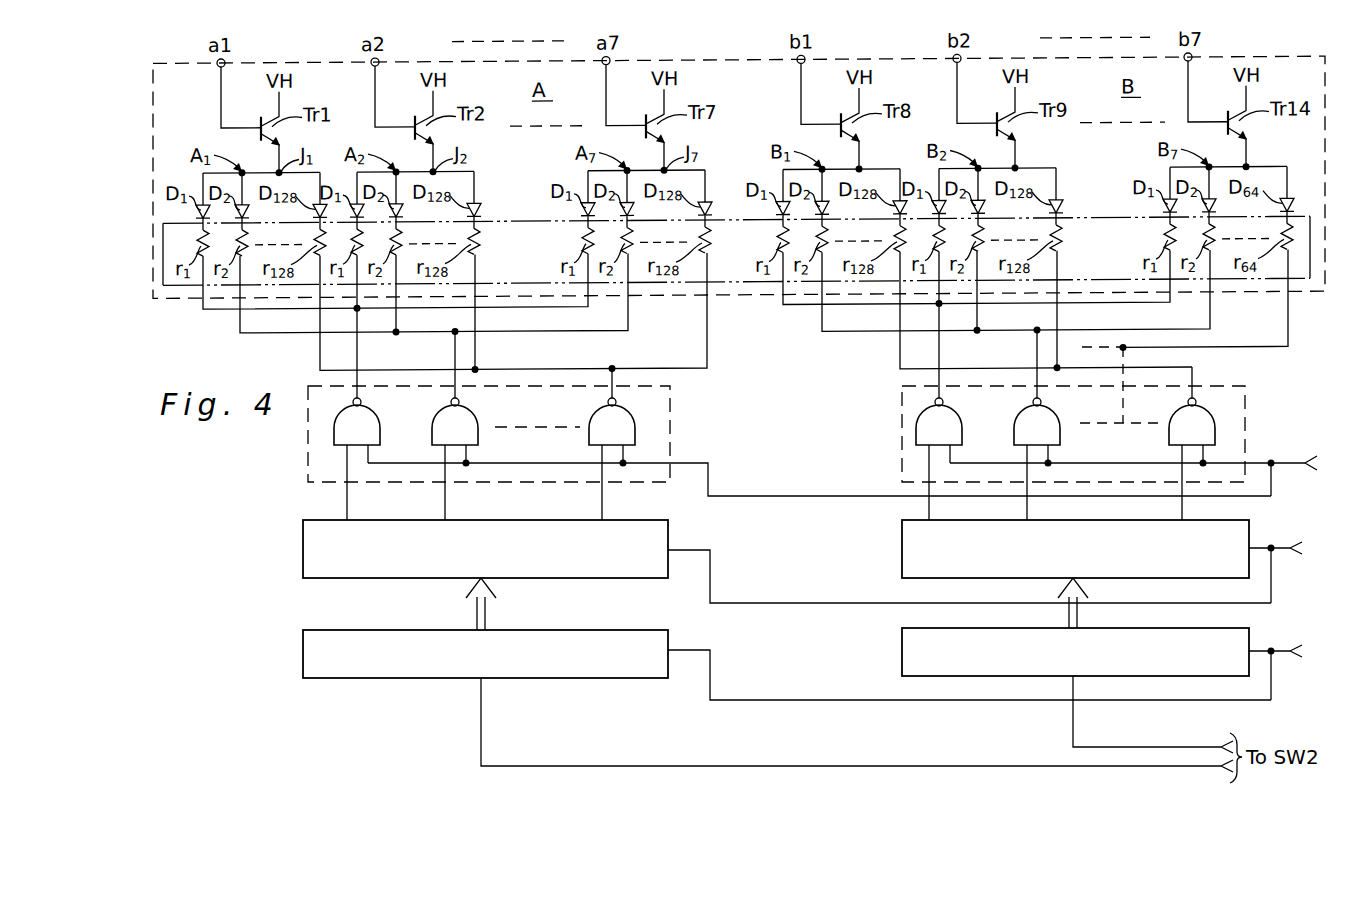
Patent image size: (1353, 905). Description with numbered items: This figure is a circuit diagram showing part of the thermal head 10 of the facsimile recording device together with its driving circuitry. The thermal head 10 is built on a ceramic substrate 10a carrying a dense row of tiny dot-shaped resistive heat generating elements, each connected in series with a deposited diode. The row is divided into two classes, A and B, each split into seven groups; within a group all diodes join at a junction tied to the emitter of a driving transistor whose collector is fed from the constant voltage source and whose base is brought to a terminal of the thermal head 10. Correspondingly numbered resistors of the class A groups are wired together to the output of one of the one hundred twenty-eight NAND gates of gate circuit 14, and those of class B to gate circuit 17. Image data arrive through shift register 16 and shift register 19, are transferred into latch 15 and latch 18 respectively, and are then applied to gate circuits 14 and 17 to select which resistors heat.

The thermal head 10 is at (1273, 63).
The ceramic substrate 10a is at (1090, 223).
The gate circuit 14 is at (670, 405).
The latch 15 is at (668, 530).
The shift register 16 is at (668, 634).
The gate circuit 17 is at (1245, 405).
The latch 18 is at (1249, 528).
The shift register 19 is at (1249, 636).